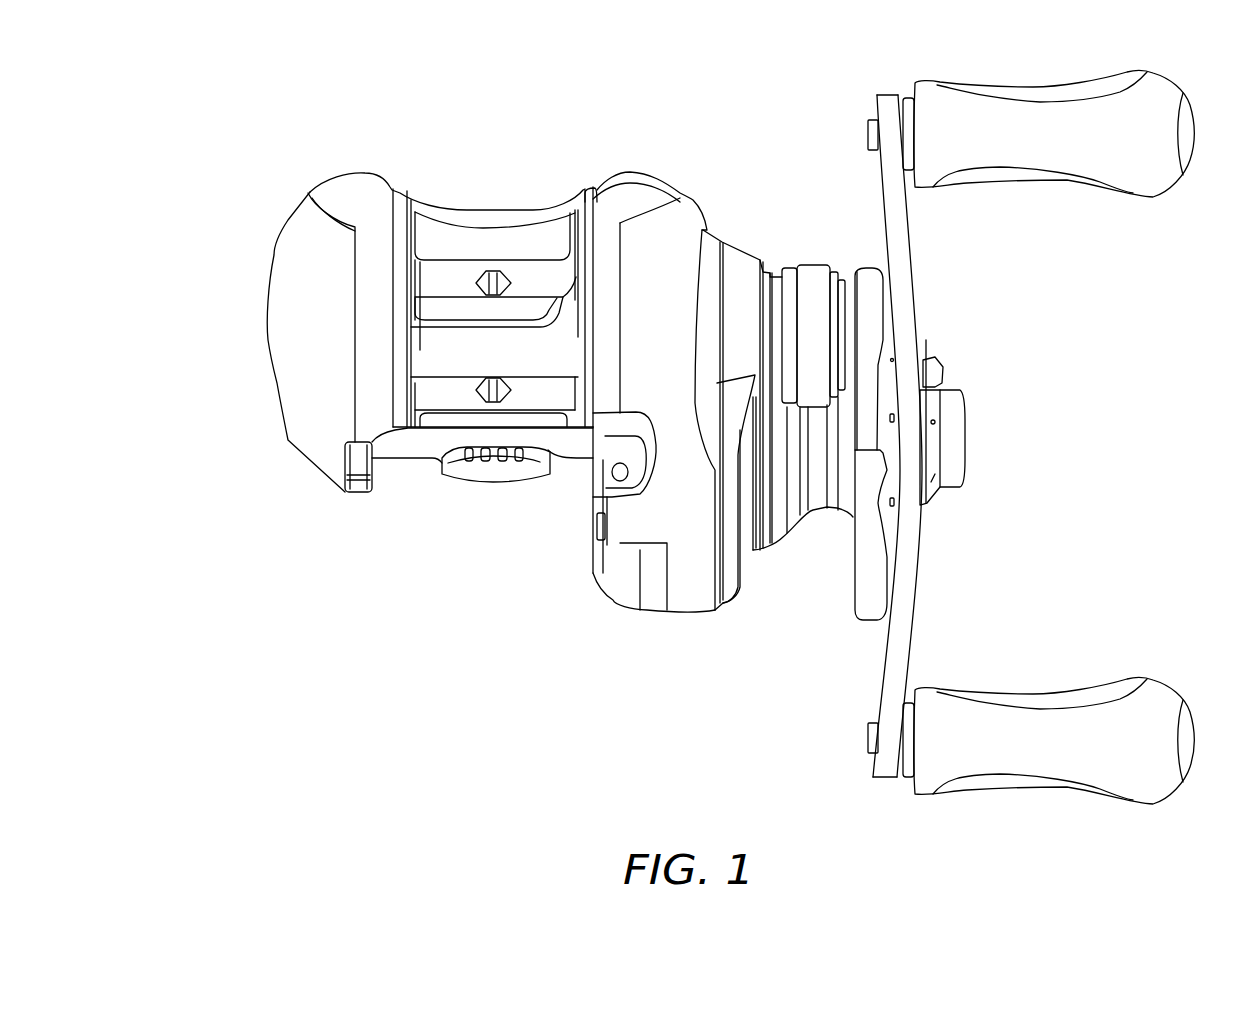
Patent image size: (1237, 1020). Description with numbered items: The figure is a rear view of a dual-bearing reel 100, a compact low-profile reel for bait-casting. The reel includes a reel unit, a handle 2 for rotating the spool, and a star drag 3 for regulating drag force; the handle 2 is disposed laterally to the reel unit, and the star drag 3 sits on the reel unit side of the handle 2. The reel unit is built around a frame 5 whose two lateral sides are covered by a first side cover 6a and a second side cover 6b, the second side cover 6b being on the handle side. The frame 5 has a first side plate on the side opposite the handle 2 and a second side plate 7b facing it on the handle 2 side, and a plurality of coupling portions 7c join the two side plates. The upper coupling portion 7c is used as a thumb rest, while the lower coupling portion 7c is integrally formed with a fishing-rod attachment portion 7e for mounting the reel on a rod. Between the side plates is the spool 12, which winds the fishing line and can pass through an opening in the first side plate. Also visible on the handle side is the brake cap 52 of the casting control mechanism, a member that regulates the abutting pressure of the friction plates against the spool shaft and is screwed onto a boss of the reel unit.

The dual-bearing reel 100 is at (1033, 393).
The handle 2 is at (908, 230).
The star drag 3 is at (865, 268).
The frame 5 is at (363, 173).
The first side cover 6a is at (270, 293).
The second side cover 6b is at (731, 590).
The second side plate 7b is at (583, 493).
The coupling portions 7c is at (420, 450).
The fishing-rod attachment portion 7e is at (493, 470).
The spool 12 is at (430, 388).
The brake cap 52 is at (815, 270).